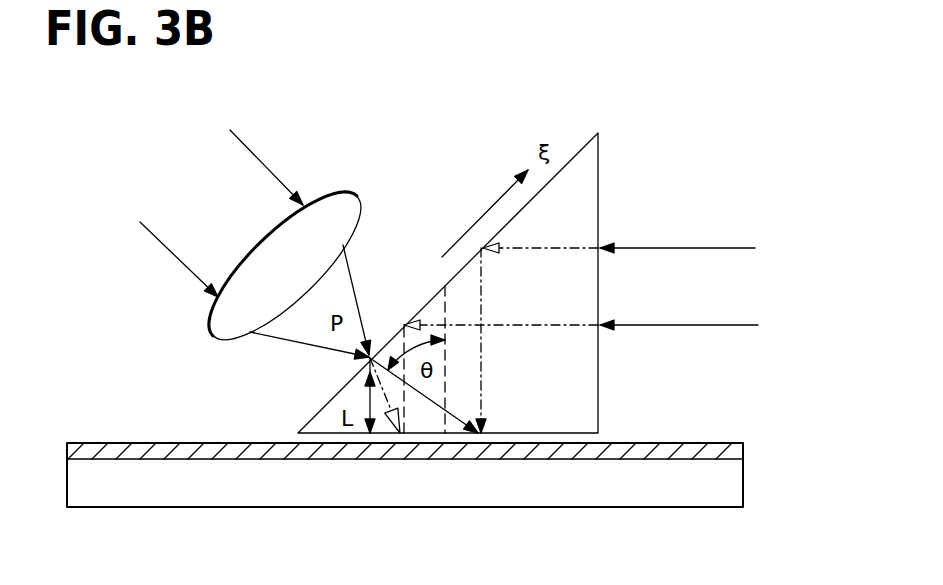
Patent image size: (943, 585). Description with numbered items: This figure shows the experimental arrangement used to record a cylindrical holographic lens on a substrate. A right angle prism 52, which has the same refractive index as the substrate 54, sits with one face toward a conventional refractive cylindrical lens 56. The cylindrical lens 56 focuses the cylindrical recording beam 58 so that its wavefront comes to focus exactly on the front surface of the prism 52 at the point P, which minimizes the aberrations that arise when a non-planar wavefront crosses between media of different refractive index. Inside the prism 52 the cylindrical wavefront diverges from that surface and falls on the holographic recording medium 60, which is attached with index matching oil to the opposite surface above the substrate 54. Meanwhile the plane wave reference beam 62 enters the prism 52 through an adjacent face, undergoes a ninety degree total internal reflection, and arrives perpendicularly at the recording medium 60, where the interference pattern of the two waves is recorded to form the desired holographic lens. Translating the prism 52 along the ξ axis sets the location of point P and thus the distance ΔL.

The right angle prism 52 is at (598, 180).
The substrate 54 is at (670, 488).
The refractive cylindrical lens 56 is at (335, 195).
The cylindrical recording beam 58 is at (351, 278).
The holographic recording medium 60 is at (663, 456).
The plane wave reference beam 62 is at (688, 246).